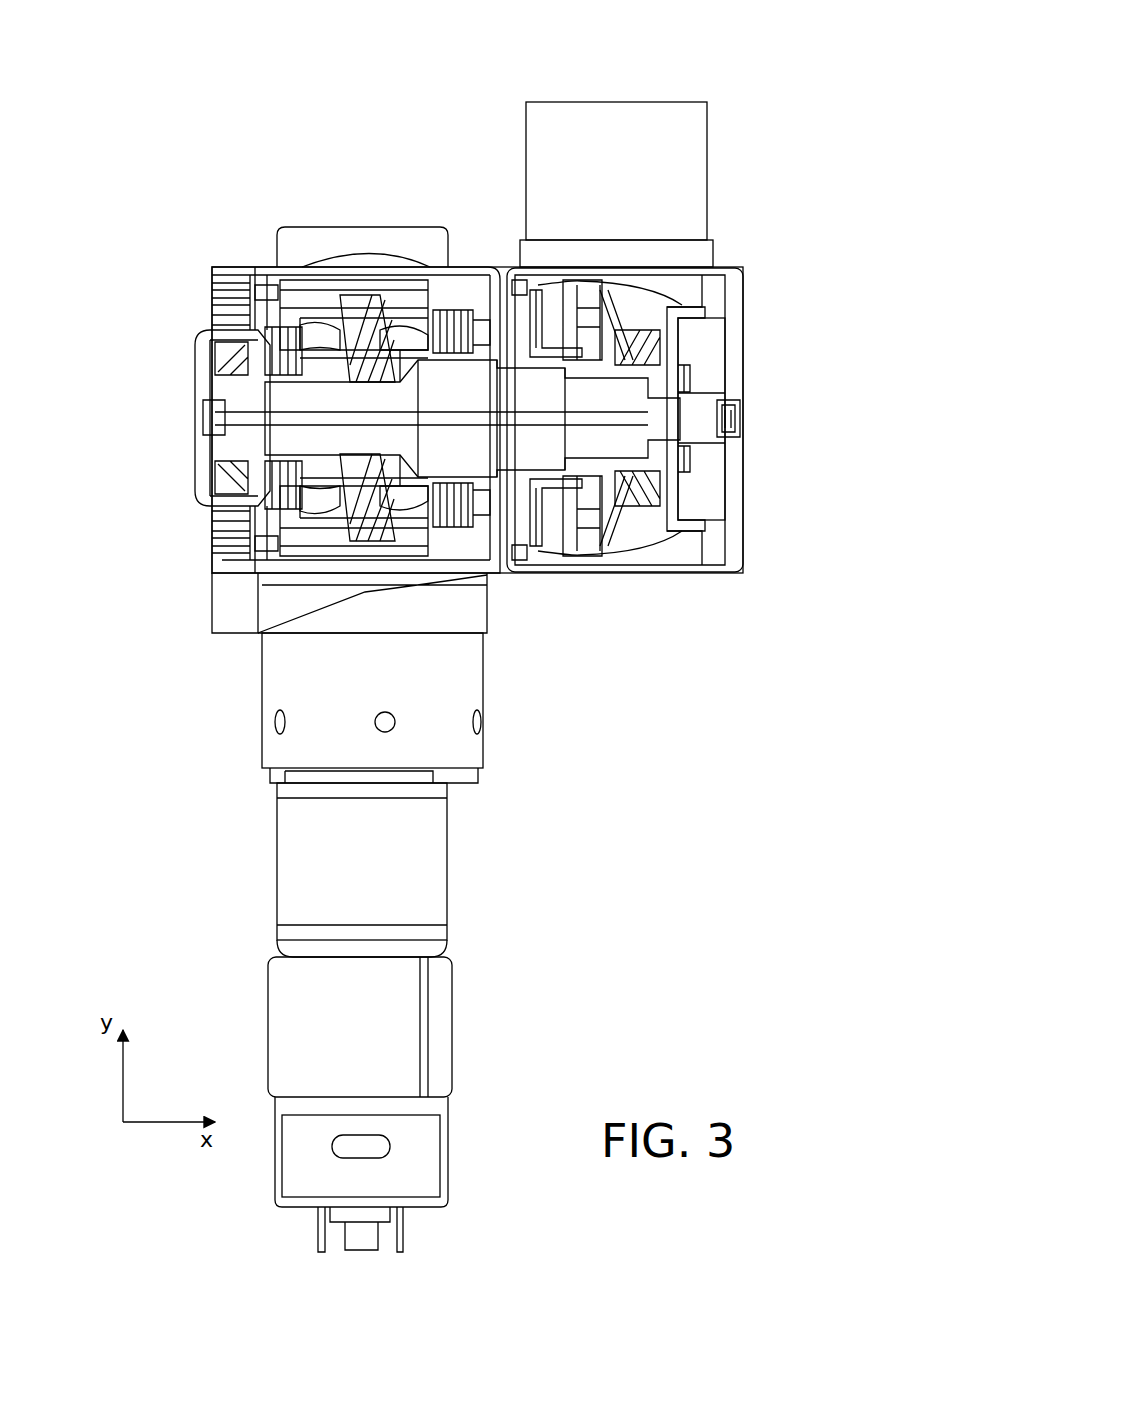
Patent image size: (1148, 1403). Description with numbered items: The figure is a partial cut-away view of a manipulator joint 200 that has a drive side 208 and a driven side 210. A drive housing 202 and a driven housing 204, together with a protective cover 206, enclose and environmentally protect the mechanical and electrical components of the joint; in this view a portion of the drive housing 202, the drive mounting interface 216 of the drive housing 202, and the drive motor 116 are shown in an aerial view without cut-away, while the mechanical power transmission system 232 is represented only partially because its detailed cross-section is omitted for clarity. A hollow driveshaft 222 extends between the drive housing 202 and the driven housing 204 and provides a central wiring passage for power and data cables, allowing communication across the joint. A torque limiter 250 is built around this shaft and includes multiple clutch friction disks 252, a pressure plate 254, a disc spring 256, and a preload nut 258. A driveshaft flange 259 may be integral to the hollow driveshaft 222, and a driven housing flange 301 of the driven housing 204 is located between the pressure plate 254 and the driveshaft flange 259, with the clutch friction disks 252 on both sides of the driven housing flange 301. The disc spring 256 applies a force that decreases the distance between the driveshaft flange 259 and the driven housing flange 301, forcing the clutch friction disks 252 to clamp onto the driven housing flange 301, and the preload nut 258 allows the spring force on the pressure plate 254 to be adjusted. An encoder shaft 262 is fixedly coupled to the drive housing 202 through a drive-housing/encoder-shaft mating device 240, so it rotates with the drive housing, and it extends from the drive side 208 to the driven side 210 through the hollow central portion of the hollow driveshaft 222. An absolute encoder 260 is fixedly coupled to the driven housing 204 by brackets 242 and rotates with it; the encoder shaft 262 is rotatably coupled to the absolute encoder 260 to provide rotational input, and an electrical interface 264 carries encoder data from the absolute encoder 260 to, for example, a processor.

The manipulator joint 200 is at (820, 128).
The drive housing 202 is at (214, 607).
The driven housing 204 is at (716, 268).
The protective cover 206 is at (748, 475).
The drive side 208 is at (370, 82).
The driven side 210 is at (615, 80).
The drive mounting interface 216 is at (263, 722).
The drive motor 116 is at (278, 880).
The hollow driveshaft 222 is at (300, 438).
The mechanical power transmission system 232 is at (330, 282).
The drive-housing/encoder-shaft mating device 240 is at (214, 410).
The brackets 242 is at (680, 345).
The torque limiter 250 is at (512, 802).
The clutch friction disks 252 is at (575, 546).
The pressure plate 254 is at (590, 542).
The disc spring 256 is at (617, 514).
The preload nut 258 is at (633, 500).
The driveshaft flange 259 is at (522, 562).
The absolute encoder 260 is at (702, 405).
The encoder shaft 262 is at (662, 383).
The electrical interface 264 is at (745, 421).
The driven housing flange 301 is at (554, 538).